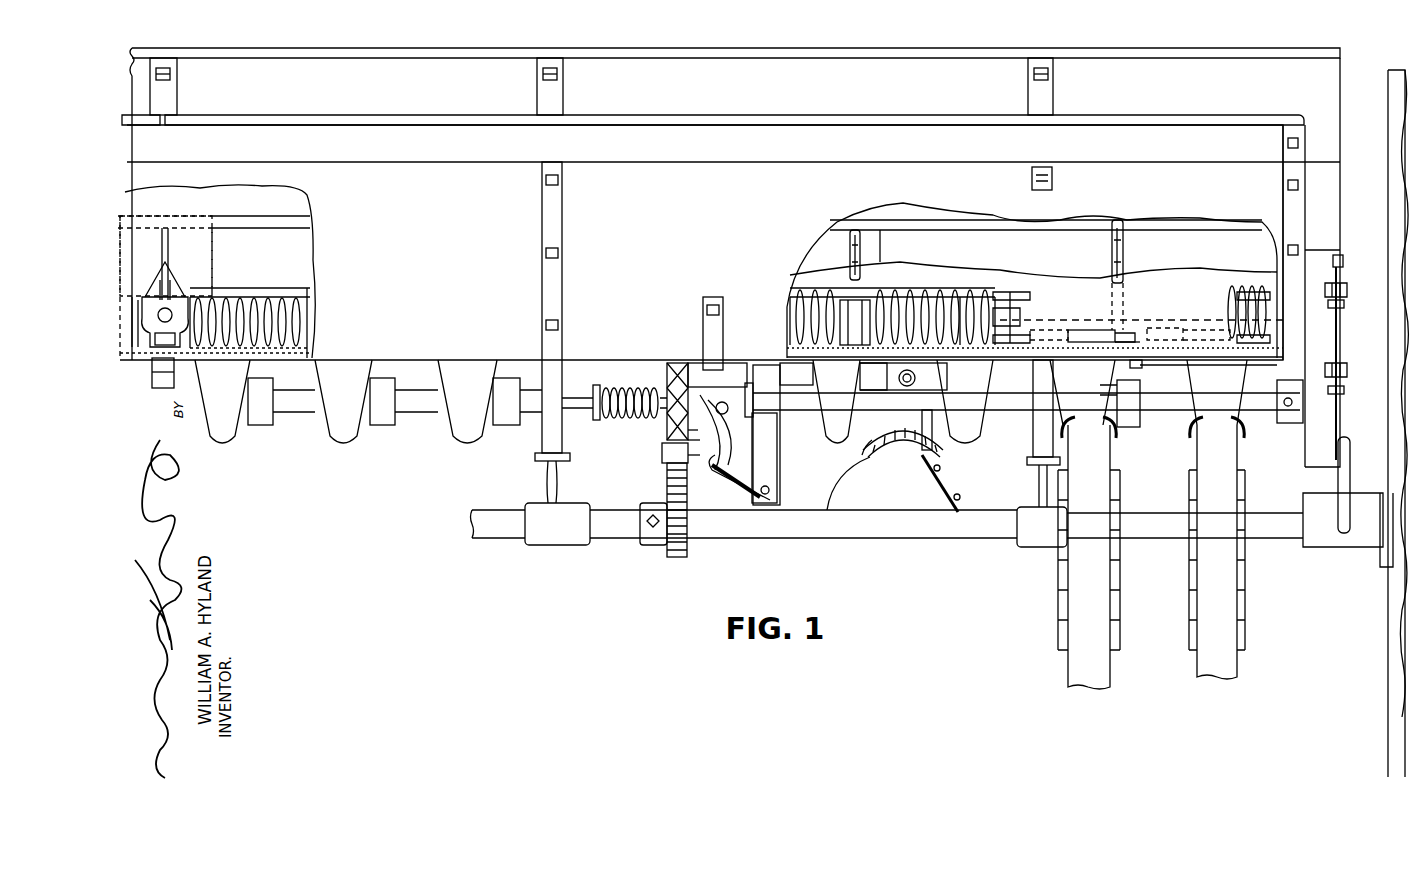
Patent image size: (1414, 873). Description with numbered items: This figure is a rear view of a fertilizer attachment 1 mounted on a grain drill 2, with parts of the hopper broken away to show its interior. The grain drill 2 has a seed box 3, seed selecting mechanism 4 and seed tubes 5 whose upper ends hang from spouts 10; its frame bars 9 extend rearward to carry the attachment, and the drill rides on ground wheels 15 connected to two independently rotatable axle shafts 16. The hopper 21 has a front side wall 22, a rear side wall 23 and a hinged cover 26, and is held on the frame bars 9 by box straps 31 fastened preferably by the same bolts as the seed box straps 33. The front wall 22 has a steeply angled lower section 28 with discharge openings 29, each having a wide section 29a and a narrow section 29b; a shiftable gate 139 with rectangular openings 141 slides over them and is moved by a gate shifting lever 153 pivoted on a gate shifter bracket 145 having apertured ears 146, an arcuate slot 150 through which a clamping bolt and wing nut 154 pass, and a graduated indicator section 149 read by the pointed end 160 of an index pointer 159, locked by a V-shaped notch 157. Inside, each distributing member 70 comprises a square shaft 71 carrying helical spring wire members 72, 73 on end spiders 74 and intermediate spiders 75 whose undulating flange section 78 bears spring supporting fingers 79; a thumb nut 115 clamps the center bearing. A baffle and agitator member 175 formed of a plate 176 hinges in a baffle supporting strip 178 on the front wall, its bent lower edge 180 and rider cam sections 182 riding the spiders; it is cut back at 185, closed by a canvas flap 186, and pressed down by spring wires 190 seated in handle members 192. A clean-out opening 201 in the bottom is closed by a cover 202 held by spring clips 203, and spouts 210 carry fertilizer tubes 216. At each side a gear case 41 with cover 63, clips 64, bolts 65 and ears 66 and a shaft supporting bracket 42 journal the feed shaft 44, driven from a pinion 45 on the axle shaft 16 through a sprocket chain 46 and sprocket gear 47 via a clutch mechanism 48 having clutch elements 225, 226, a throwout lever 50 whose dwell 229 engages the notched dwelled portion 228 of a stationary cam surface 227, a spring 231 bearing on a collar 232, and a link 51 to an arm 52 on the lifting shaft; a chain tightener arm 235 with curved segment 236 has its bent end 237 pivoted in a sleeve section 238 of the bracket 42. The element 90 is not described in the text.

The fertilizer attachment 1 is at (380, 110).
The grain drill 2 is at (627, 46).
The seed box 3 is at (876, 375).
The seed selecting mechanism 4 is at (153, 258).
The seed tubes 5 is at (1192, 570).
The frame bars 9 is at (540, 457).
The spouts 10 is at (1192, 462).
The ground wheels 15 is at (1388, 645).
The axle shafts 16 is at (930, 535).
The hopper 21 is at (808, 138).
The front side wall 22 is at (272, 204).
The rear side wall 23 is at (640, 172).
The hinged cover 26 is at (1098, 118).
The lower angled section 28 is at (1072, 320).
The fertilizer discharge openings 29 is at (1085, 330).
The wide section 29a is at (1190, 330).
The narrow section 29b is at (1180, 335).
The box straps 31 is at (1036, 170).
The seed box straps 33 is at (178, 97).
The gear case 41 is at (1325, 250).
The shaft supporting bracket 42 is at (718, 335).
The feed shaft 44 is at (985, 402).
The pinion 45 is at (679, 560).
The sprocket chain 46 is at (655, 540).
The sprocket gear 47 is at (693, 368).
The clutch mechanism 48 is at (690, 360).
The throwout lever 50 is at (665, 456).
The link 51 is at (725, 490).
The arm 52 is at (770, 478).
The cover 63 is at (1338, 348).
The clips 64 is at (1346, 288).
The bolts 65 is at (1340, 260).
The ears 66 is at (1346, 304).
The distributing member 70 is at (935, 285).
The square shaft 71 is at (273, 297).
The helical spring wire members 72 is at (792, 300).
The helical spring wire members 73 is at (248, 296).
The end spider 74 is at (212, 300).
The intermediate spiders 75 is at (792, 303).
The flange section 78 is at (850, 345).
The spring supporting fingers 79 is at (962, 295).
The clamp body 90 is at (150, 348).
The thumb nut 115 is at (185, 282).
The shiftable gate 139 is at (1125, 282).
The rectangular openings 141 is at (1050, 330).
The gate shifter bracket 145 is at (868, 458).
The apertured ears 146 is at (947, 372).
The indicator section 149 is at (895, 457).
The slot 150 is at (865, 462).
The gate shifting lever 153 is at (958, 515).
The clamping bolt and wing nut 154 is at (940, 440).
The V-shaped notch 157 is at (944, 470).
The index pointer 159 is at (960, 497).
The pointed end 160 is at (930, 470).
The baffle and agitator member 175 is at (140, 205).
The plate 176 is at (877, 236).
The baffle supporting strip 178 is at (298, 224).
The bent lower edge 180 is at (303, 287).
The cam section 182 is at (860, 305).
The cut back 185 is at (170, 265).
The canvas flap 186 is at (197, 228).
The spring wires 190 is at (855, 233).
The handle members 192 is at (848, 250).
The clean-out openings 201 is at (1108, 390).
The cover 202 is at (1137, 368).
The spring clips 203 is at (1175, 366).
The spouts 210 is at (455, 410).
The tubes 216 is at (1197, 665).
The clutch element 225 is at (668, 440).
The clutch element 226 is at (760, 413).
The stationary cam surface 227 is at (762, 462).
The notched dwelled portion 228 is at (710, 370).
The dwell 229 is at (700, 400).
The spring 231 is at (630, 380).
The collar 232 is at (605, 385).
The chain tightener arm 235 is at (670, 470).
The curved segment 236 is at (662, 450).
The bent end 237 is at (732, 425).
The sleeve section 238 is at (752, 462).